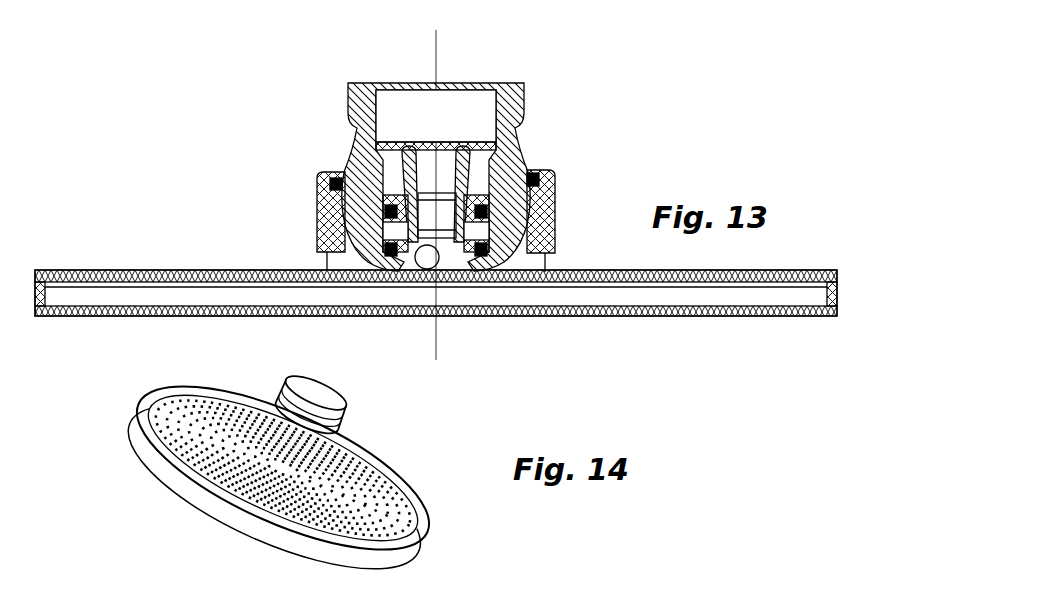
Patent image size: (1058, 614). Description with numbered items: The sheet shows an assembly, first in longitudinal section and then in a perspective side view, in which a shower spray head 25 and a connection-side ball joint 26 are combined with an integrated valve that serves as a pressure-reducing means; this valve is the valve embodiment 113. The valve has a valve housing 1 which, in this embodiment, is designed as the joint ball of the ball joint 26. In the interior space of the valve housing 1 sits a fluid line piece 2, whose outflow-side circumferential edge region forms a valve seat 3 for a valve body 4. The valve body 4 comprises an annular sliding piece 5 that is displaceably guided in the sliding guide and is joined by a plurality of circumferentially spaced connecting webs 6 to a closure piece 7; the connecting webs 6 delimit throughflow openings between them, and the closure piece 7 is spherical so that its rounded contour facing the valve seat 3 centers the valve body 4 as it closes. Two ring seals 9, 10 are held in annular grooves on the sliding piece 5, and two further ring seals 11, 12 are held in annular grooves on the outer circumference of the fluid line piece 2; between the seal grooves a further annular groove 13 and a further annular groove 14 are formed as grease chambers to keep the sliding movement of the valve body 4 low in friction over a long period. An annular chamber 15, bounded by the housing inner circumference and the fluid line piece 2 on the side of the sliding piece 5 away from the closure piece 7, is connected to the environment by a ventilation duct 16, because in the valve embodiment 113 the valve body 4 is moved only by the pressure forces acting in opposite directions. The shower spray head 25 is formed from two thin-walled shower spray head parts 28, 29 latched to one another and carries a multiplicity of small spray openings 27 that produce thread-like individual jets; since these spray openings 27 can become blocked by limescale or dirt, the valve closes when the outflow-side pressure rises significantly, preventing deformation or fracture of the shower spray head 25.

In FIG. 13, the valve embodiment 113 is at (303, 114).
In FIG. 14, the valve embodiment 113 is at (270, 388).
In FIG. 13, the valve housing 1 is at (519, 97).
In FIG. 14, the valve housing 1 is at (318, 380).
In FIG. 13, the fluid line piece 2 is at (417, 170).
In FIG. 13, the valve seat 3 is at (427, 257).
In FIG. 13, the valve body 4 is at (430, 278).
In FIG. 13, the sliding piece 5 is at (470, 194).
In FIG. 13, the connecting webs 6 is at (408, 275).
In FIG. 13, the closure piece 7 is at (442, 278).
In FIG. 13, the ring seal 9 is at (492, 209).
In FIG. 13, the ring seal 10 is at (489, 249).
In FIG. 13, the ring seal 11 is at (437, 208).
In FIG. 13, the ring seal 12 is at (437, 231).
In FIG. 13, the annular groove 13 is at (437, 210).
In FIG. 13, the annular groove 14 is at (483, 228).
In FIG. 13, the annular chamber 15 is at (390, 178).
In FIG. 13, the ventilation duct 16 is at (510, 163).
In FIG. 13, the shower spray head 25 is at (595, 245).
In FIG. 14, the shower spray head 25 is at (412, 478).
In FIG. 13, the ball joint 26 is at (556, 120).
In FIG. 14, the ball joint 26 is at (366, 420).
In FIG. 13, the spray openings 27 is at (666, 320).
In FIG. 14, the spray openings 27 is at (226, 470).
In FIG. 13, the shower spray head part 28 is at (183, 278).
In FIG. 13, the shower spray head part 29 is at (93, 314).